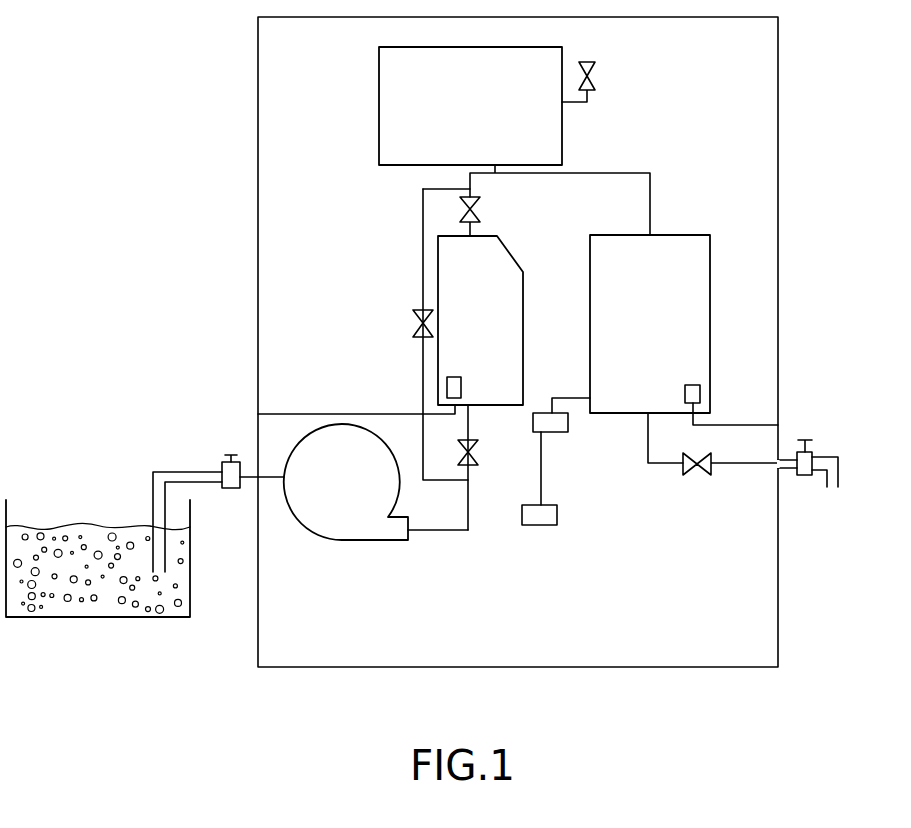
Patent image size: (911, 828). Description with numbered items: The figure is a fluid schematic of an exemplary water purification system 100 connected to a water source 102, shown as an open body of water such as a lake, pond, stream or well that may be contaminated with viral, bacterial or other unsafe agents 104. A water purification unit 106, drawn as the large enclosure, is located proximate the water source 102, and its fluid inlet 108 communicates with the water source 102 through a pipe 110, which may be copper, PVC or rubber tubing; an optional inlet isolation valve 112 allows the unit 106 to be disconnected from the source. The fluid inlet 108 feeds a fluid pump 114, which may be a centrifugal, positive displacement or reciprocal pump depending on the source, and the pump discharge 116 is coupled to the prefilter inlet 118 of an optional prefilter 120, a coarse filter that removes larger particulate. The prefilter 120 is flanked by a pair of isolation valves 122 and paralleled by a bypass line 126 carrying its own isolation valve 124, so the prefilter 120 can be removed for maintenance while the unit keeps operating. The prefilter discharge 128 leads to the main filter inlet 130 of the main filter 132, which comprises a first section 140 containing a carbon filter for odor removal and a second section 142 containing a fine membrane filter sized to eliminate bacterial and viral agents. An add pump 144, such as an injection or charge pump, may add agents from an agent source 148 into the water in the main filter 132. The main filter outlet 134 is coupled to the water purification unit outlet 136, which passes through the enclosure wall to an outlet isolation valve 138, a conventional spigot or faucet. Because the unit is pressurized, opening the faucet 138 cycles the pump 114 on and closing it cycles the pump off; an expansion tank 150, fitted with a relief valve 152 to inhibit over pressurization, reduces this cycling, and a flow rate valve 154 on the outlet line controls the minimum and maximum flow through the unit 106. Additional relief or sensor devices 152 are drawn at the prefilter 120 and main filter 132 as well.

The water purification system 100 is at (156, 181).
The water source 102 is at (63, 620).
The unsafe agents 104 is at (133, 588).
The water purification unit 106 is at (257, 256).
The fluid inlet 108 is at (240, 460).
The pipe 110 is at (153, 490).
The inlet isolation valve 112 is at (228, 490).
The fluid pump 114 is at (345, 545).
The pump discharge 116 is at (413, 542).
The prefilter inlet 118 is at (478, 416).
The prefilter 120 is at (512, 250).
The isolation valves 122 is at (478, 212).
The isolation valve 124 is at (423, 258).
The bypass line 126 is at (412, 333).
The prefilter discharge 128 is at (460, 232).
The main filter inlet 130 is at (657, 225).
The main filter 132 is at (600, 415).
The main filter outlet 134 is at (636, 428).
The water purification unit outlet 136 is at (769, 475).
The outlet isolation valve 138 is at (805, 477).
The first section 140 is at (587, 253).
The second section 142 is at (586, 380).
The add pump 144 is at (545, 436).
The agent source 148 is at (560, 515).
The expansion tank 150 is at (379, 143).
The relief valve 152 is at (595, 81).
The flow rate valve 154 is at (683, 472).